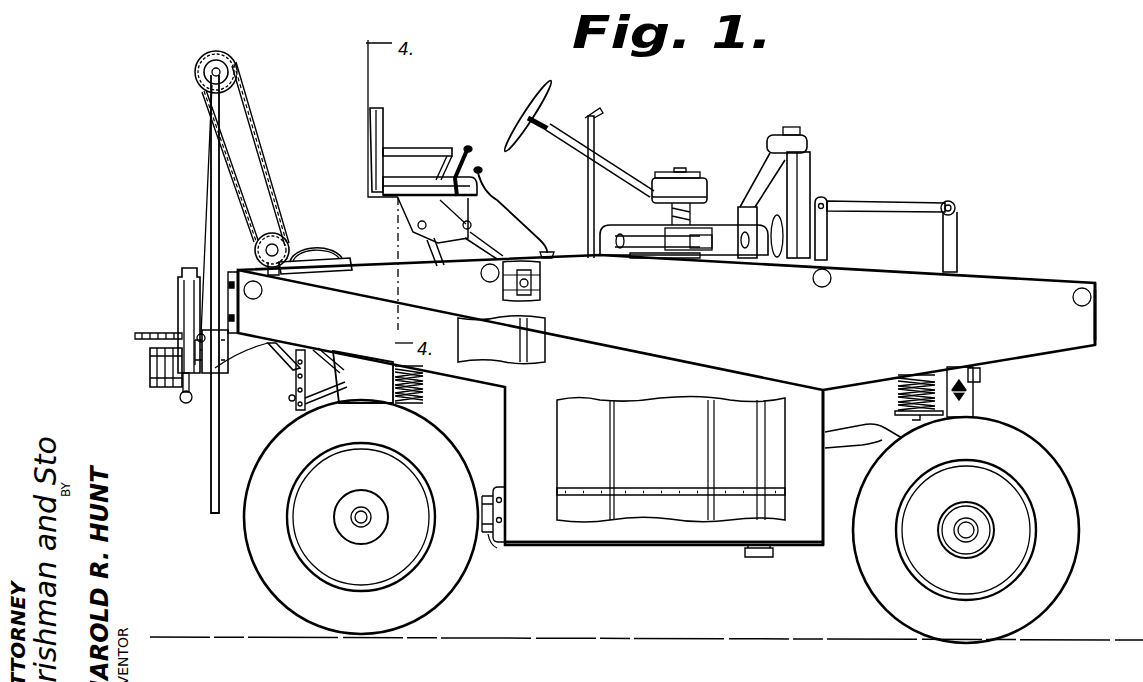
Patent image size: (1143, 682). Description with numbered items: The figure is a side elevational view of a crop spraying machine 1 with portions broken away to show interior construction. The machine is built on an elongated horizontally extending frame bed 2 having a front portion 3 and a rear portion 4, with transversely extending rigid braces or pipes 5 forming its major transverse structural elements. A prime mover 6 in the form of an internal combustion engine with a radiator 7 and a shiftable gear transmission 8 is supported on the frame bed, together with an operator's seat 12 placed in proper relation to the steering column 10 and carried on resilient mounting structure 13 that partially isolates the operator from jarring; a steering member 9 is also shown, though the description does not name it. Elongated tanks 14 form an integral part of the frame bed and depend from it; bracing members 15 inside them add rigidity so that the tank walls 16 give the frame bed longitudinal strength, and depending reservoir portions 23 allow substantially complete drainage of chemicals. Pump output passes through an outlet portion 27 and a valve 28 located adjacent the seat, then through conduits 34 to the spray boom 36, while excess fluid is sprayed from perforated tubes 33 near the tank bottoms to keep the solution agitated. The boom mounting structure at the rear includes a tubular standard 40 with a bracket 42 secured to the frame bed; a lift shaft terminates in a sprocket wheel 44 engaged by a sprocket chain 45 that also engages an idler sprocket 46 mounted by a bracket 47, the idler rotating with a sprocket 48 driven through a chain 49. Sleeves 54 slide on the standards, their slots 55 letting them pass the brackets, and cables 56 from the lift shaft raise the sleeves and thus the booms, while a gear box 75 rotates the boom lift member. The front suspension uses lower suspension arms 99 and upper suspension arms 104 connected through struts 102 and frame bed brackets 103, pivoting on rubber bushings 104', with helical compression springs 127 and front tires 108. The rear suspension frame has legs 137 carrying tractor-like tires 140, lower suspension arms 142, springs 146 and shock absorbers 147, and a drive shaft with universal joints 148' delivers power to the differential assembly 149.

The crop spraying machine 1 is at (1100, 318).
The frame bed 2 is at (1000, 285).
The front portion 3 is at (1094, 290).
The rear portion 4 is at (242, 270).
The transversely extending rigid braces or pipes 5 is at (814, 279).
The prime mover 6 is at (718, 222).
The radiator 7 is at (817, 172).
The shiftable gear transmission 8 is at (548, 253).
The steering column 9 is at (623, 170).
The steering column 10 is at (555, 129).
The operator's seat 12 is at (391, 144).
The resilient mounting structure 13 is at (447, 258).
The tanks 14 is at (543, 528).
The bracing members 15 is at (525, 318).
The walls 16 is at (800, 527).
The reservoir portions 23 is at (757, 560).
The outlet portion 27 is at (440, 257).
The valve 28 is at (470, 132).
The perforated tubes 33 is at (650, 490).
The conduits 34 is at (238, 370).
The spray boom 36 is at (184, 321).
The standard 40 is at (212, 156).
The bracket 42 is at (225, 308).
The sprocket wheel 44 is at (232, 60).
The sprocket chain 45 is at (248, 112).
The idler sprocket 46 is at (281, 230).
The bracket 47 is at (276, 272).
The sprocket 48 is at (280, 246).
The chain 49 is at (291, 247).
The sleeves 54 is at (210, 392).
The slots 55 is at (222, 376).
The cables 56 is at (208, 232).
The gear box 75 is at (150, 372).
The lower suspension arms 99 is at (875, 438).
The struts 102 is at (957, 244).
The brackets 103 is at (827, 240).
The upper suspension arms 104 is at (886, 195).
The rubber bushings 104' is at (975, 203).
The tires 108 is at (880, 607).
The helical compression springs 127 is at (897, 397).
The legs 137 is at (357, 390).
The tires 140 is at (280, 597).
The lower suspension arms 142 is at (490, 536).
The helical compression springs 146 is at (428, 386).
The shock absorbers 147 is at (970, 391).
The universal joints 148' is at (548, 281).
The differential assembly 149 is at (306, 252).